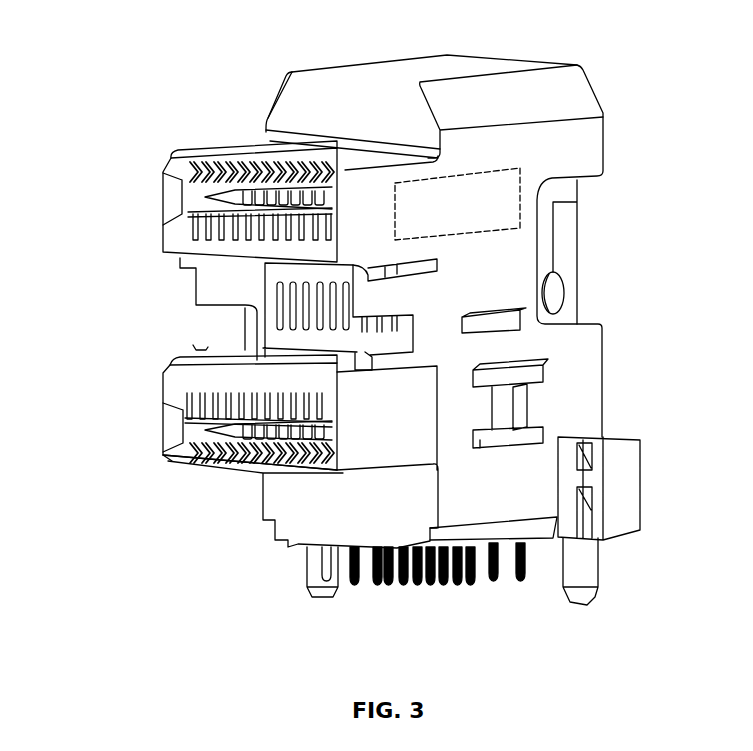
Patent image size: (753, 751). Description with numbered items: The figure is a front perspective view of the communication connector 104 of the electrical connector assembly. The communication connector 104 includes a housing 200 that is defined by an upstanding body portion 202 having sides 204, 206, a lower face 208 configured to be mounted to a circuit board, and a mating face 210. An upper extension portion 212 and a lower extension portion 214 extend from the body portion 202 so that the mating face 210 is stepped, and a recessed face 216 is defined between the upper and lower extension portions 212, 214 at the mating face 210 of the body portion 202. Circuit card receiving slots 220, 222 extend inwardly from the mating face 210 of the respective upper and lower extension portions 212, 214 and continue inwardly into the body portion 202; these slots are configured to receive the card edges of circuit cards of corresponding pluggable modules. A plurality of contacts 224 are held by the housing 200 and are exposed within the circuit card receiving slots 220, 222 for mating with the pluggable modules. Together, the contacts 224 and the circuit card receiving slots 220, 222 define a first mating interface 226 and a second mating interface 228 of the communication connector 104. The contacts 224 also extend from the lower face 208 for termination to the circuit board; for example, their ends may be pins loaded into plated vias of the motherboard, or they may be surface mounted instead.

The communication connector 104 is at (284, 40).
The housing 200 is at (588, 147).
The body portion 202 is at (584, 378).
The side 204 is at (507, 265).
The side 206 is at (267, 128).
The lower face 208 is at (373, 547).
The mating face 210 is at (140, 458).
The upper extension portion 212 is at (173, 237).
The lower extension portion 214 is at (173, 393).
The recessed face 216 is at (297, 338).
The circuit card receiving slot 220 is at (198, 196).
The circuit card receiving slot 222 is at (198, 428).
The contacts 224 is at (228, 200).
The first mating interface 226 is at (120, 219).
The second mating interface 228 is at (124, 447).